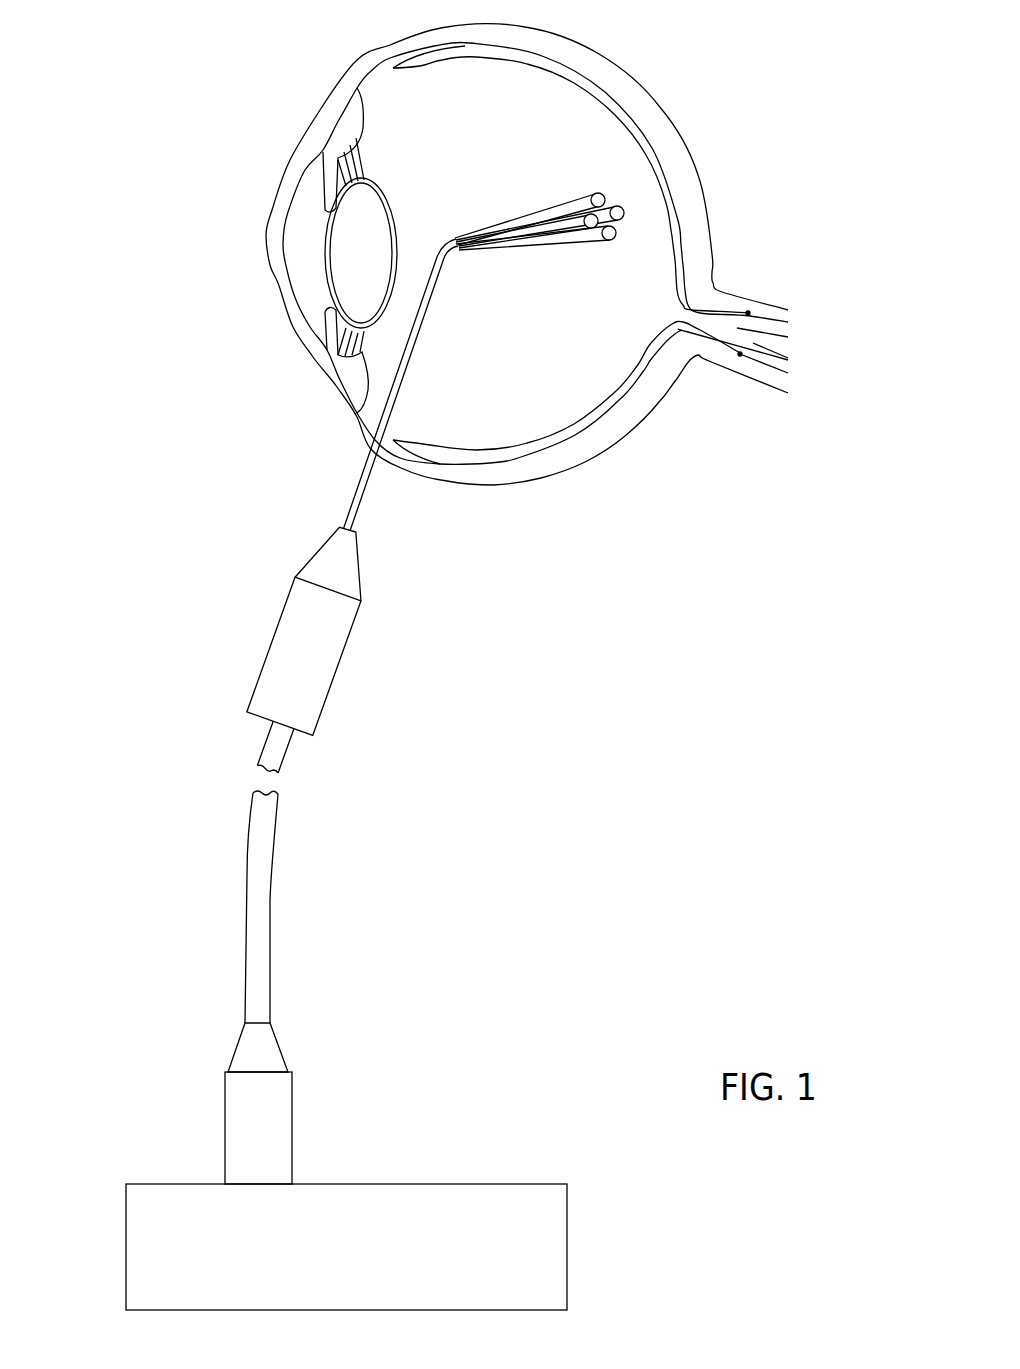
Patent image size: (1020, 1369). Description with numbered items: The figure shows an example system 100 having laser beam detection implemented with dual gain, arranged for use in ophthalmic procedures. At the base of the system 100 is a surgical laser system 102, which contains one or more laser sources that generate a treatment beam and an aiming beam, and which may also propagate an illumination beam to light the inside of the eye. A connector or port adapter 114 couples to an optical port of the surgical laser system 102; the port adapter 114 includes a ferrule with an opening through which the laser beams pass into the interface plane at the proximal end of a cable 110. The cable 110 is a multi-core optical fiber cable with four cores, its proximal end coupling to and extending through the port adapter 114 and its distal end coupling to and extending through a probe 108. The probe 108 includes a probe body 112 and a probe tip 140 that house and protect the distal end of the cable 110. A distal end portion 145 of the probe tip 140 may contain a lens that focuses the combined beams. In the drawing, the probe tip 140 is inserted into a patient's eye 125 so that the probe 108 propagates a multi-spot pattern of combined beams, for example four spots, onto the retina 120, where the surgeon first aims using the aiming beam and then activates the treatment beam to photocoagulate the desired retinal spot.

The system 100 is at (130, 833).
The surgical laser system 102 is at (545, 1243).
The probe 108 is at (380, 643).
The cable 110 is at (252, 825).
The probe body 112 is at (265, 665).
The port adapter 114 is at (225, 1100).
The retina 120 is at (633, 384).
The eye 125 is at (353, 66).
The probe tip 140 is at (398, 388).
The distal end portion 145 is at (430, 305).